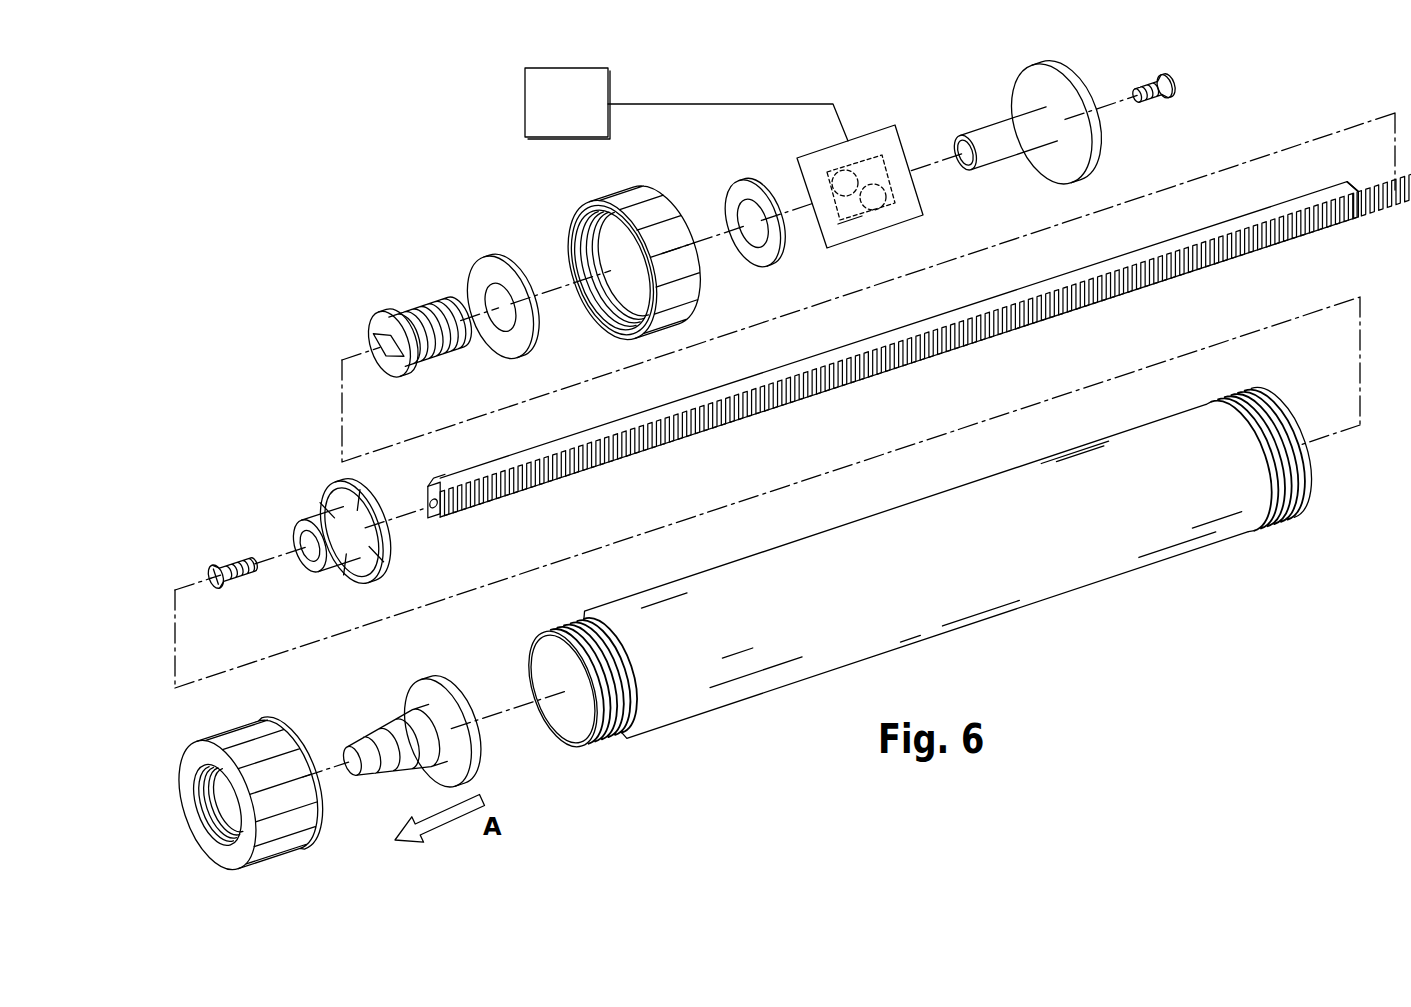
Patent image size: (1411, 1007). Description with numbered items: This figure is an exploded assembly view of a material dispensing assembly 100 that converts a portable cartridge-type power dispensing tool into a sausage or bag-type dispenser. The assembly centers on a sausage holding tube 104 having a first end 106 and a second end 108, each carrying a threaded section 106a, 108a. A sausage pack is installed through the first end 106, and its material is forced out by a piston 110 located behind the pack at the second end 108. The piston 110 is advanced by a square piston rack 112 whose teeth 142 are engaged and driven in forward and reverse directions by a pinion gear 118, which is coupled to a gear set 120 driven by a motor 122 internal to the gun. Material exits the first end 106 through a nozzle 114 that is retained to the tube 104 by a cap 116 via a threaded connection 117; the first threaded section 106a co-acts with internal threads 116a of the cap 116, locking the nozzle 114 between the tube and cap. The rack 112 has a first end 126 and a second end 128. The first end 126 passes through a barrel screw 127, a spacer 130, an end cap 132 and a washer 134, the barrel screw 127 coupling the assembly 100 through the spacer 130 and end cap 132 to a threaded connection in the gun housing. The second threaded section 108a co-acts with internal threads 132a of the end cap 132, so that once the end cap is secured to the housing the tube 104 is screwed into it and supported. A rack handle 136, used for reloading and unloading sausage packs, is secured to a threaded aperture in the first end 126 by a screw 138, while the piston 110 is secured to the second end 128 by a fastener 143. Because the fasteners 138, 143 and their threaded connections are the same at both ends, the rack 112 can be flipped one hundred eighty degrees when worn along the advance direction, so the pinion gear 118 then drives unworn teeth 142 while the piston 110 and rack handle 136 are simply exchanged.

The material dispensing assembly 100 is at (426, 155).
The sausage holding tube 104 is at (949, 597).
The first end 106 is at (614, 712).
The first threaded section 106a is at (607, 714).
The second end 108 is at (1307, 473).
The second threaded section 108a is at (1290, 464).
The piston 110 is at (316, 509).
The piston rack 112 is at (925, 334).
The nozzle 114 is at (417, 723).
The cap 116 is at (229, 800).
The internal threads 116a is at (230, 806).
The threaded connection 117 is at (432, 519).
The pinion gear 118 is at (920, 200).
The gear set 120 is at (849, 234).
The motor 122 is at (610, 84).
The first end of rack 126 is at (1352, 190).
The barrel screw 127 is at (395, 312).
The second end of rack 128 is at (442, 526).
The spacer 130 is at (486, 258).
The end cap 132 is at (611, 272).
The internal threads 132a is at (612, 292).
The washer 134 is at (742, 185).
The rack handle 136 is at (1028, 86).
The screw 138 is at (1198, 112).
The teeth 142 is at (989, 340).
The fastener 143 is at (236, 580).